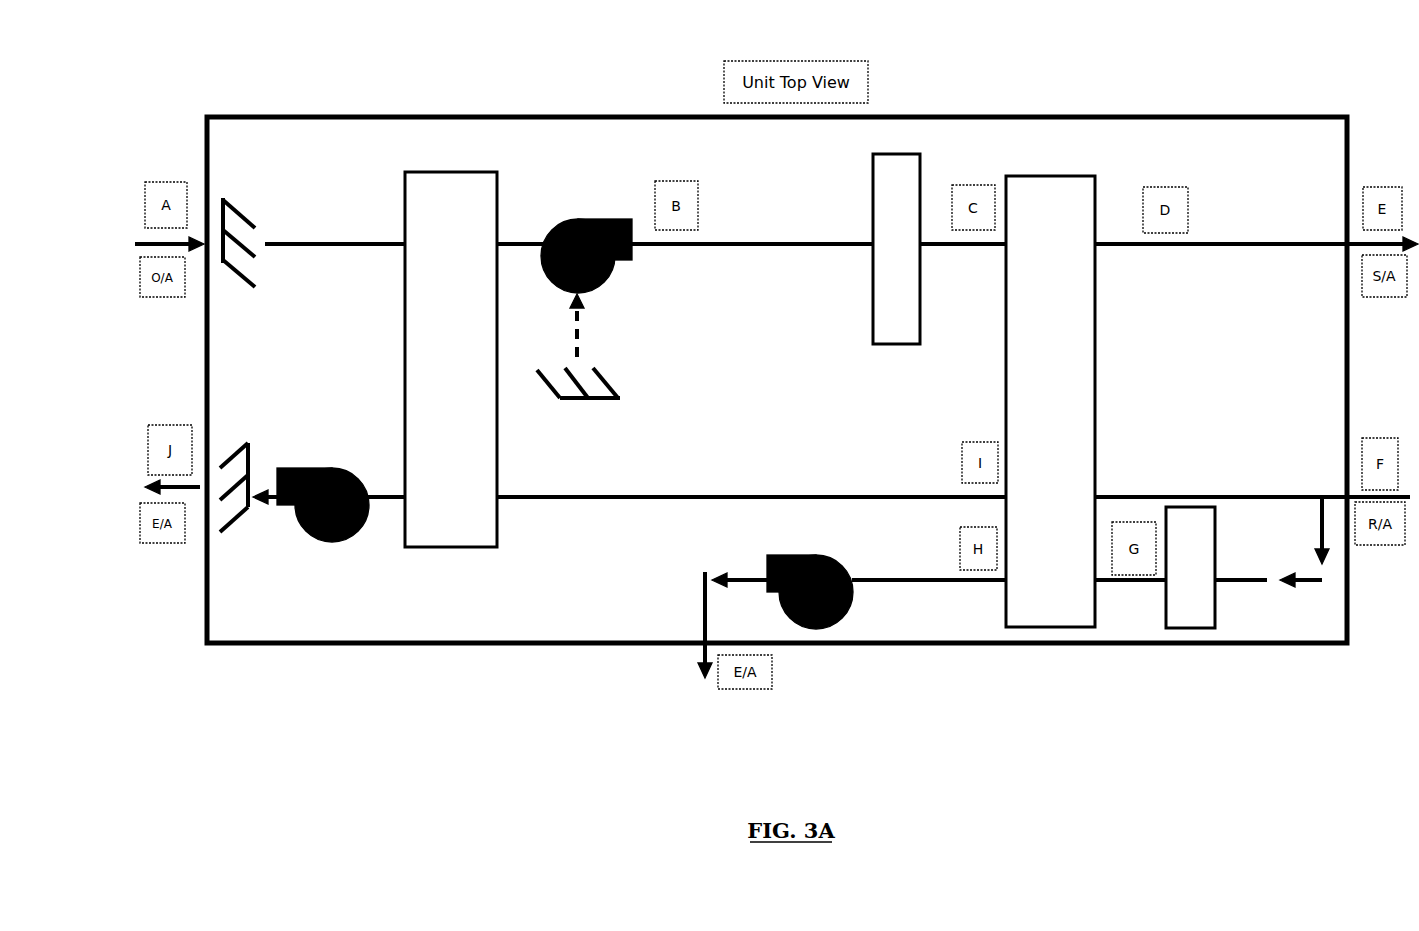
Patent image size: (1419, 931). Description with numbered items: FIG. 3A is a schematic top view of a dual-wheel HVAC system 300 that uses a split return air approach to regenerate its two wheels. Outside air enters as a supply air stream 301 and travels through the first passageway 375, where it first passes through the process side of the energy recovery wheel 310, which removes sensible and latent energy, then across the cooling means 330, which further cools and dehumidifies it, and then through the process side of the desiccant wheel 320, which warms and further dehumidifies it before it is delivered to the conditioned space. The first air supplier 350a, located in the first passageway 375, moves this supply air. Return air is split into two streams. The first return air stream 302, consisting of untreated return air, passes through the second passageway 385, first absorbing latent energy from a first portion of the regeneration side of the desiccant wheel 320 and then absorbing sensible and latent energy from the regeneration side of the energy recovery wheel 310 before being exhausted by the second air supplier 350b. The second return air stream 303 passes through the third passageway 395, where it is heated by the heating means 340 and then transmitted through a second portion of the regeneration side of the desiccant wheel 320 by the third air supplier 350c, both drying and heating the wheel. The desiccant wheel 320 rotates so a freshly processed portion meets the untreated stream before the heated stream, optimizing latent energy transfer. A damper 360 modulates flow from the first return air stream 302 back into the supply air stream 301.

The dual-wheel HVAC system 300 is at (258, 90).
The supply air stream 301 is at (102, 229).
The first return air stream 302 is at (1270, 485).
The second return air stream 303 is at (1259, 598).
The energy recovery wheel 310 is at (436, 445).
The desiccant wheel 320 is at (1039, 464).
The cooling means 330 is at (882, 314).
The heating means 340 is at (1176, 610).
The first air supplier 350a is at (585, 206).
The second air supplier 350b is at (322, 452).
The third air supplier 350c is at (832, 547).
The damper 360 is at (630, 378).
The first passageway 375 is at (797, 226).
The second passageway 385 is at (787, 480).
The third passageway 395 is at (922, 597).